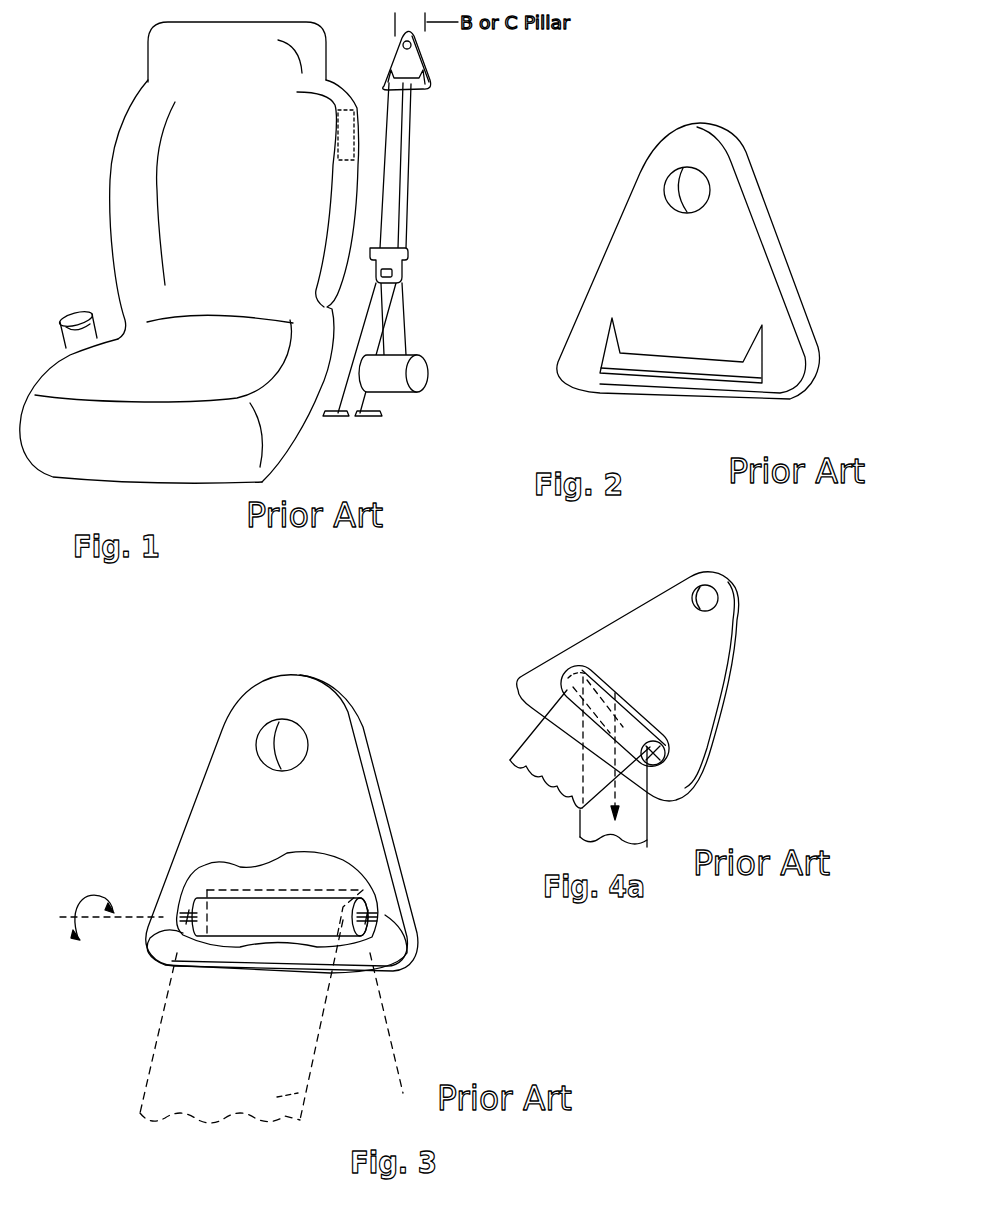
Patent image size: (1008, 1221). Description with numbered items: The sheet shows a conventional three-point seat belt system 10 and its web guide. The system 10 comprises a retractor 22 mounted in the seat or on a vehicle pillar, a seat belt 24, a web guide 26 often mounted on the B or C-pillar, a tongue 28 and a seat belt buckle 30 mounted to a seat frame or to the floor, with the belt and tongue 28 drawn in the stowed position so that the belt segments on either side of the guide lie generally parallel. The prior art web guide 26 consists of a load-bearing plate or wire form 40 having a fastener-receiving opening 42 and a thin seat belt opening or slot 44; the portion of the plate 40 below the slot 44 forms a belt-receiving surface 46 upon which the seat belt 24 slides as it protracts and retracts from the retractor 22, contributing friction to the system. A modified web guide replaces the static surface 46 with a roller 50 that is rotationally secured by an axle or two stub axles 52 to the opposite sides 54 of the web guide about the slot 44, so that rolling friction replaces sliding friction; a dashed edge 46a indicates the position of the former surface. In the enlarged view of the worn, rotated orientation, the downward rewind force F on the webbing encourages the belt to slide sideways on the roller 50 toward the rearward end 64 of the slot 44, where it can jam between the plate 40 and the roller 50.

In FIG. 1, the three-point seat belt system 10 is at (88, 177).
In FIG. 1, the retractor 22 is at (418, 380).
In FIG. 1, the seat belt 24 is at (411, 168).
In FIG. 3, the seat belt 24 is at (300, 1093).
In FIG. 4A, the seat belt 24 is at (523, 757).
In FIG. 1, the web guide 26 is at (400, 38).
In FIG. 2, the web guide 26 is at (728, 165).
In FIG. 3, the web guide 26 is at (347, 788).
In FIG. 4A, the web guide 26 is at (638, 596).
In FIG. 1, the tongue 28 is at (400, 264).
In FIG. 1, the seat belt buckle 30 is at (62, 337).
In FIG. 2, the load-bearing plate or wire form 40 is at (648, 172).
In FIG. 2, the fastener-receiving opening 42 is at (695, 187).
In FIG. 1, the seat belt opening or slot 44 is at (411, 74).
In FIG. 2, the seat belt opening or slot 44 is at (713, 365).
In FIG. 3, the seat belt opening or slot 44 is at (309, 870).
In FIG. 4A, the seat belt opening or slot 44 is at (603, 677).
In FIG. 2, the belt-receiving surface 46 is at (733, 382).
In FIG. 3, the slot edge 46a is at (284, 907).
In FIG. 3, the roller 50 is at (340, 925).
In FIG. 4A, the roller 50 is at (650, 797).
In FIG. 3, the axle 52 is at (182, 918).
In FIG. 4A, the axle 52 is at (573, 678).
In FIG. 3, the opposite sides of the web guide 54 is at (175, 873).
In FIG. 4A, the rearward end of opening 64 is at (708, 748).